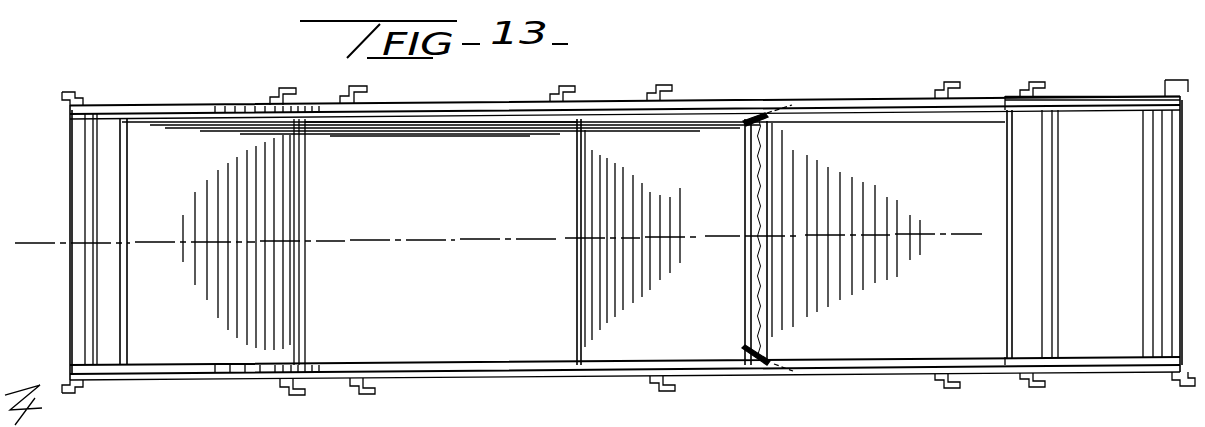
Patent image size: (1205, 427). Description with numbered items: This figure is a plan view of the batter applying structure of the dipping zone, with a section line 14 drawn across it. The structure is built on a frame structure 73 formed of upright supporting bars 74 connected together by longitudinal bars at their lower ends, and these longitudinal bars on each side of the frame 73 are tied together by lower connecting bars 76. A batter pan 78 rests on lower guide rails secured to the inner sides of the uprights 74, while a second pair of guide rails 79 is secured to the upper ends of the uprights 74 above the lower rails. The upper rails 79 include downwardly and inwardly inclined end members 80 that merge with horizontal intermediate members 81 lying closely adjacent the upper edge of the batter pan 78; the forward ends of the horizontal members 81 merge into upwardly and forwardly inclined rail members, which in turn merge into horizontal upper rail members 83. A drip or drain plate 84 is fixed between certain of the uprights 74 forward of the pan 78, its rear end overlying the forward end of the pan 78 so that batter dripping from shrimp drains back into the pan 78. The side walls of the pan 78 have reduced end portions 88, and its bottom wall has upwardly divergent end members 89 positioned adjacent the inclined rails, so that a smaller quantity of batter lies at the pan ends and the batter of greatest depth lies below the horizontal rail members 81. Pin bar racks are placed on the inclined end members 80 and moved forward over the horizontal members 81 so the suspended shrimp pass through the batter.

The section line 14- 14 is at (962, 207).
The frame structure 73 is at (858, 93).
The upright supporting bars 74 is at (285, 89).
The lower connecting bars 76 is at (1146, 277).
The batter pan 78 is at (491, 147).
The second pair of guide rails 79 is at (222, 104).
The downwardly and inwardly inclined end members 80 is at (165, 107).
The horizontal intermediate members 81 is at (455, 107).
The horizontal upper rail members 83 is at (1090, 94).
The drip or drain plate 84 is at (892, 234).
The reduced end portions 88 is at (689, 238).
The upwardly divergent end members 89 is at (212, 242).